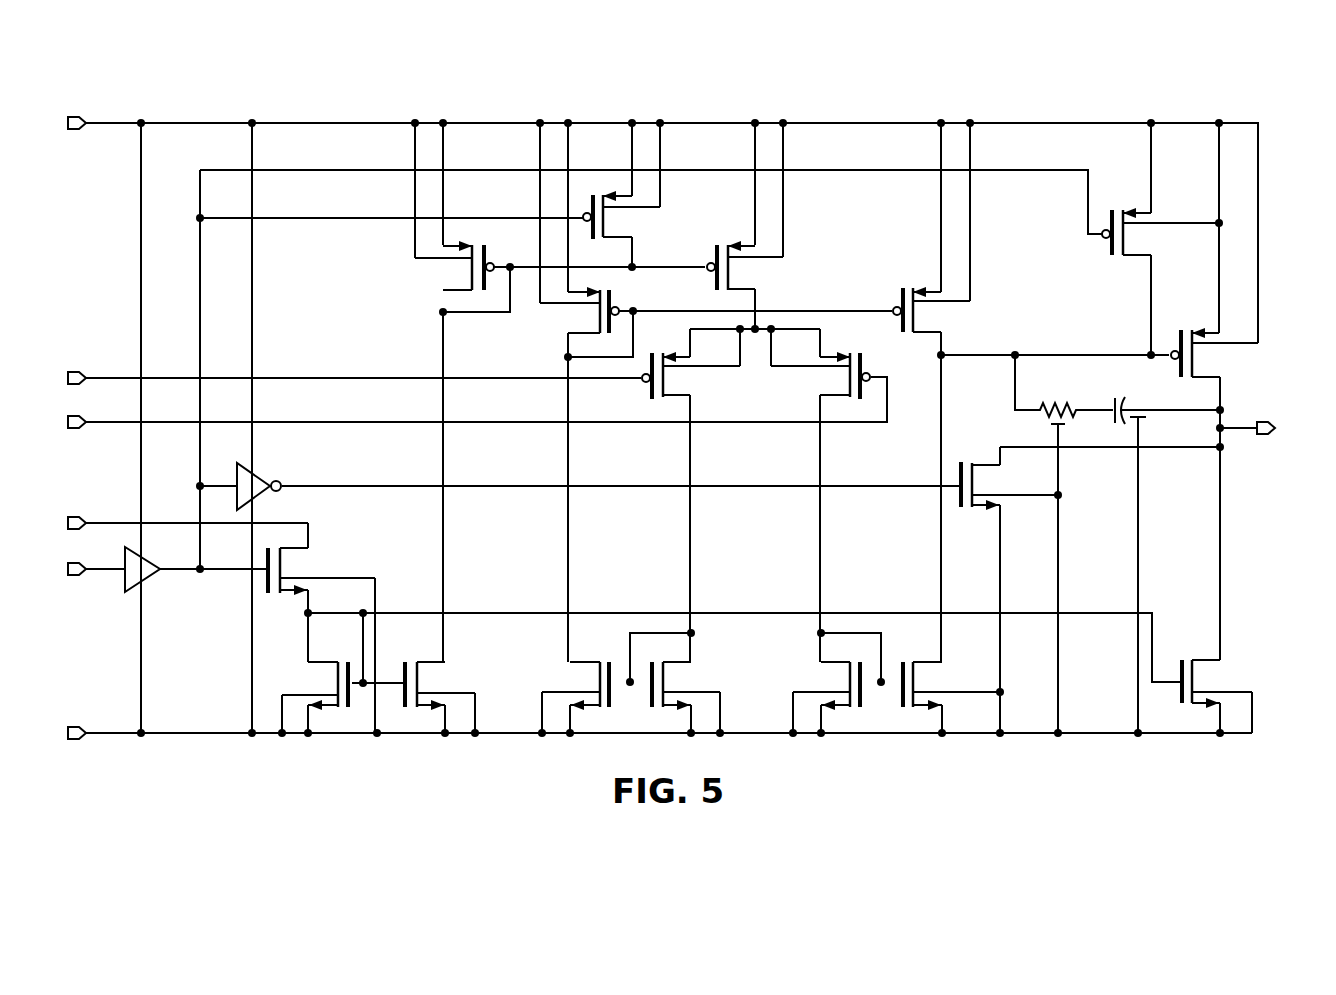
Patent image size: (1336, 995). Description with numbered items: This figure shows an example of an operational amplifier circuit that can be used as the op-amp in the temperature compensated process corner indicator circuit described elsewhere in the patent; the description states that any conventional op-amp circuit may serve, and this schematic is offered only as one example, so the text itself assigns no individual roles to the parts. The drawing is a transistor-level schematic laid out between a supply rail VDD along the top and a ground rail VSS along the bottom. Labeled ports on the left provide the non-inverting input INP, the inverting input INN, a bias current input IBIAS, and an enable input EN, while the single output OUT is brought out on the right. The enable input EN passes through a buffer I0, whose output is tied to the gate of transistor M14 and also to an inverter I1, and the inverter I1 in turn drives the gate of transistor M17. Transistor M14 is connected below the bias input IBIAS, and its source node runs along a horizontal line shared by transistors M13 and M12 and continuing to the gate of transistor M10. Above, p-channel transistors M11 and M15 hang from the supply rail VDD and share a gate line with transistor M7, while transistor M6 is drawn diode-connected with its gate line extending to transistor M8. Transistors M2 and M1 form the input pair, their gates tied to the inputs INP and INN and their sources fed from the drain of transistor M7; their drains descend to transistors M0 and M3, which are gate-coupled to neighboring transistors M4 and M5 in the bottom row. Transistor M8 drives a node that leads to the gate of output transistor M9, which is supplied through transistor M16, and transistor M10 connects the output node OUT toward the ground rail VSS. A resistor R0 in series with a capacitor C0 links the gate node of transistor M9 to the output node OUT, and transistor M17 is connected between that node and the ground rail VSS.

The NMOS transistor M0 is at (692, 686).
The PMOS input transistor M1 is at (820, 377).
The PMOS input transistor M2 is at (691, 377).
The NMOS transistor M3 is at (823, 686).
The NMOS transistor M4 is at (574, 686).
The NMOS transistor M5 is at (951, 686).
The PMOS transistor M6 is at (577, 311).
The PMOS transistor M7 is at (751, 267).
The PMOS transistor M8 is at (935, 311).
The PMOS output transistor M9 is at (1214, 353).
The NMOS output transistor M10 is at (1227, 684).
The PMOS transistor M11 is at (446, 266).
The NMOS transistor M12 is at (452, 686).
The NMOS transistor M13 is at (305, 686).
The NMOS transistor M14 is at (321, 571).
The PMOS transistor M15 is at (635, 216).
The PMOS transistor M16 is at (1160, 234).
The NMOS transistor M17 is at (1009, 486).
The compensation resistor R0 is at (1064, 389).
The compensation capacitor C0 is at (1162, 396).
The buffer I0 is at (196, 564).
The inverter I1 is at (580, 480).
The supply voltage port VDD is at (636, 227).
The ground port VSS is at (634, 733).
The positive input port INP is at (334, 378).
The negative input port INN is at (457, 406).
The bias current input IBIAS is at (158, 523).
The enable input EN is at (77, 569).
The output port OUT is at (1274, 429).